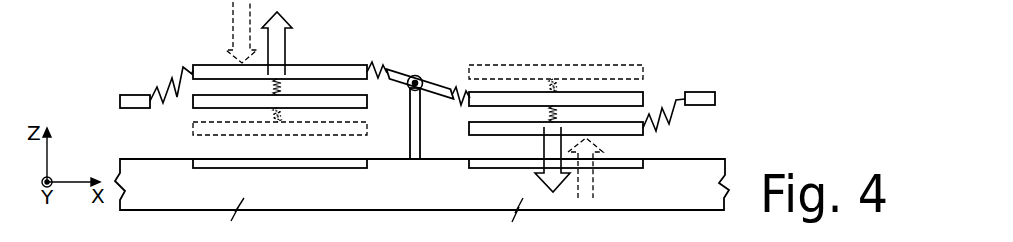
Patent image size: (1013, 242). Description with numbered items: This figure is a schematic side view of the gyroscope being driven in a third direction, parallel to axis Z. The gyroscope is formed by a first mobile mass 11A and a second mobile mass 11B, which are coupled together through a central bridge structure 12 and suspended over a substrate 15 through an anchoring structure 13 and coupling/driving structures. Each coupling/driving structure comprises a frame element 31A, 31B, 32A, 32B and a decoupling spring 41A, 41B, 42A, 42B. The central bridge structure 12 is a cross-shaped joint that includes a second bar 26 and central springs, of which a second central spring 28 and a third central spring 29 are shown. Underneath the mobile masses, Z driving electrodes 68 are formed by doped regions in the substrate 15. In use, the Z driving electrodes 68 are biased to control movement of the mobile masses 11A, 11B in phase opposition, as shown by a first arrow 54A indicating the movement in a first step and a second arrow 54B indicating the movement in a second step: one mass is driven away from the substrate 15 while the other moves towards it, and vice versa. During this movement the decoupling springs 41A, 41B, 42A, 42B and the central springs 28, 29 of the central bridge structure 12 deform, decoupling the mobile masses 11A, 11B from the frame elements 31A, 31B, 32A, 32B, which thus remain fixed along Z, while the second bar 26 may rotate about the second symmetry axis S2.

The first mobile mass 11A is at (307, 121).
The second mobile mass 11B is at (598, 123).
The central bridge structure 12 is at (443, 73).
The anchoring structure 13 is at (411, 161).
The substrate 15 is at (702, 203).
The second bar 26 is at (396, 99).
The second central spring 28 is at (421, 76).
The third central spring 29 is at (381, 64).
The frame element 31A is at (121, 97).
The frame element 31B is at (715, 99).
The frame element 32A is at (367, 101).
The frame element 32B is at (492, 96).
The decoupling spring 41A is at (175, 76).
The decoupling spring 41B is at (660, 122).
The decoupling spring 42A is at (275, 86).
The decoupling spring 42B is at (558, 110).
The first arrow 54A is at (287, 38).
The second arrow 54B is at (232, 23).
The Z driving electrodes 68 is at (280, 169).
The second symmetry axis S2 is at (390, 115).